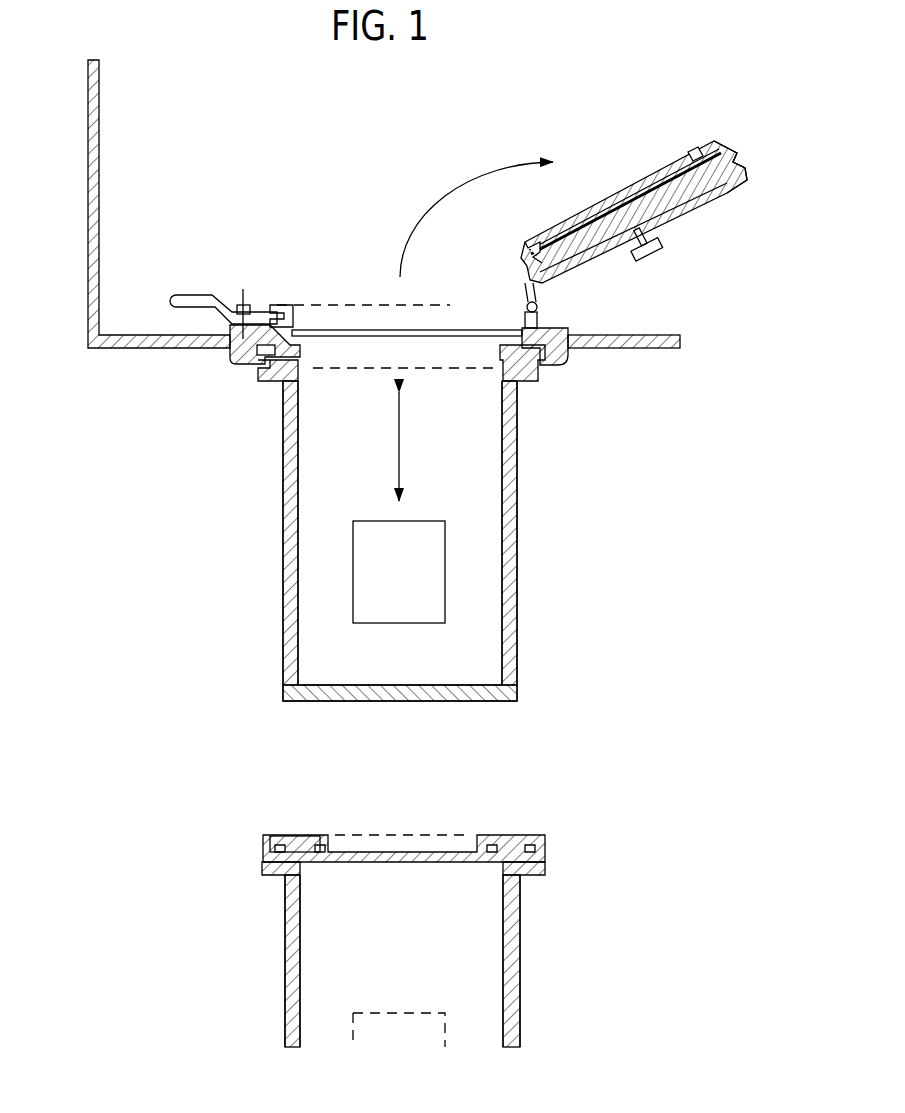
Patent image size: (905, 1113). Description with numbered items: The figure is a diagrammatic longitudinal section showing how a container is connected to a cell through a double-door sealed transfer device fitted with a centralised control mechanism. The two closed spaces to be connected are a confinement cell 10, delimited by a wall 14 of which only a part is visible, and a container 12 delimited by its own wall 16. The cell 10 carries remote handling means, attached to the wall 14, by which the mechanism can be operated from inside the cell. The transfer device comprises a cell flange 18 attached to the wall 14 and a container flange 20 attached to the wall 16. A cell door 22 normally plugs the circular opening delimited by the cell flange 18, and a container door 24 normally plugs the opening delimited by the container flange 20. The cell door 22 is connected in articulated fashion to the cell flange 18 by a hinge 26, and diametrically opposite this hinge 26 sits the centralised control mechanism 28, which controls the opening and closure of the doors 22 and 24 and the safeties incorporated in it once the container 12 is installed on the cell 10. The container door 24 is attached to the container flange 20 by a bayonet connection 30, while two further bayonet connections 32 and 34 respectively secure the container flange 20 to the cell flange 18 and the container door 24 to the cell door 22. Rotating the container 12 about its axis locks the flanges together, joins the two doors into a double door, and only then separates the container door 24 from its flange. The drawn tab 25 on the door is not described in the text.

The confinement cell 10 is at (333, 178).
The container 12 is at (364, 452).
The wall 14 is at (100, 162).
The wall 16 is at (283, 615).
The cell flange 18 is at (235, 362).
The container flange 20 is at (263, 380).
The cell door 22 is at (592, 254).
The container door 24 is at (660, 150).
The lid end tab 25 is at (700, 195).
The hinge 26 is at (547, 312).
The centralised control mechanism 28 is at (204, 286).
The bayonet connection 30 is at (285, 832).
The bayonet connection 32 is at (553, 372).
The bayonet connection 34 is at (695, 178).